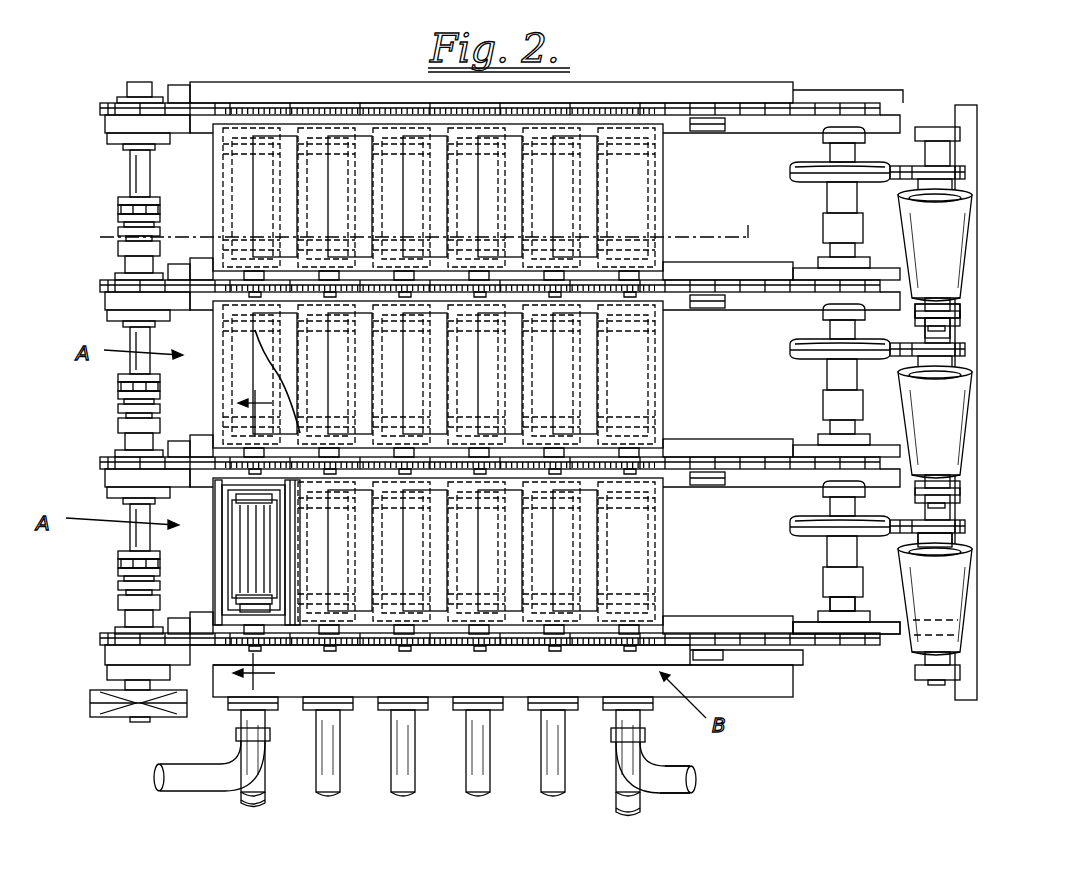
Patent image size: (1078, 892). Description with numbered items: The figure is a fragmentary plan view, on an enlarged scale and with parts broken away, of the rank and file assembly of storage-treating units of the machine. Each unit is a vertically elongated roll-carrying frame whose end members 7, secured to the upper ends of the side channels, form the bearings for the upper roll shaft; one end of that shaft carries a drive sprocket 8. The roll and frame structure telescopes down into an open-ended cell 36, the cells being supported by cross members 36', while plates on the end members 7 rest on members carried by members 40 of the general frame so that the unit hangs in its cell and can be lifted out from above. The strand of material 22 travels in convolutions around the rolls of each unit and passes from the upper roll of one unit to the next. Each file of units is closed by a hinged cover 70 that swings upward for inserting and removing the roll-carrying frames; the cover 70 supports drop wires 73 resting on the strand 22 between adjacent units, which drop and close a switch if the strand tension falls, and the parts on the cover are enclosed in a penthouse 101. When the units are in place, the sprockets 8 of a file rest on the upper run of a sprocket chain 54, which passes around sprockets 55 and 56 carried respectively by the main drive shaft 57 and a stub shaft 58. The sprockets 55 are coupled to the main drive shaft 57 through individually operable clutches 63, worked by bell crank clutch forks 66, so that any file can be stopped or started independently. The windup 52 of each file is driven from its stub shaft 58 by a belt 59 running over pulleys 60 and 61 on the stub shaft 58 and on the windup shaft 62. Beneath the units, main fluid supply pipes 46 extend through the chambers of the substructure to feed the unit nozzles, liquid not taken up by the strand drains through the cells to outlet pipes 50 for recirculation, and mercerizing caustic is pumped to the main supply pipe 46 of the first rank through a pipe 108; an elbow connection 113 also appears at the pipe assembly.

The end members 7 is at (266, 513).
The drive sprocket 8 is at (243, 297).
The strand of material 22 is at (757, 236).
The cell 36 is at (277, 552).
The cross members 36' is at (226, 550).
The frame members 40 is at (200, 490).
The main fluid supply pipes 46 is at (243, 720).
The outlet pipes 50 is at (266, 793).
The windup 52 is at (990, 240).
The sprocket chain 54 is at (100, 107).
The sprockets 55 is at (108, 456).
The sprockets 56 is at (866, 655).
The main drive shaft 57 is at (141, 722).
The stub shafts 58 is at (830, 603).
The belt 59 is at (903, 346).
The pulley 60 is at (806, 162).
The pulley 61 is at (965, 336).
The windup shaft 62 is at (947, 539).
The clutches 63 is at (115, 216).
The bell crank clutch forks 66 is at (160, 212).
The cover 70 is at (663, 228).
The drop wires 73 is at (302, 183).
The penthouse 101 is at (663, 195).
The pipe 108 is at (567, 765).
The elbow outlet 113 is at (690, 778).